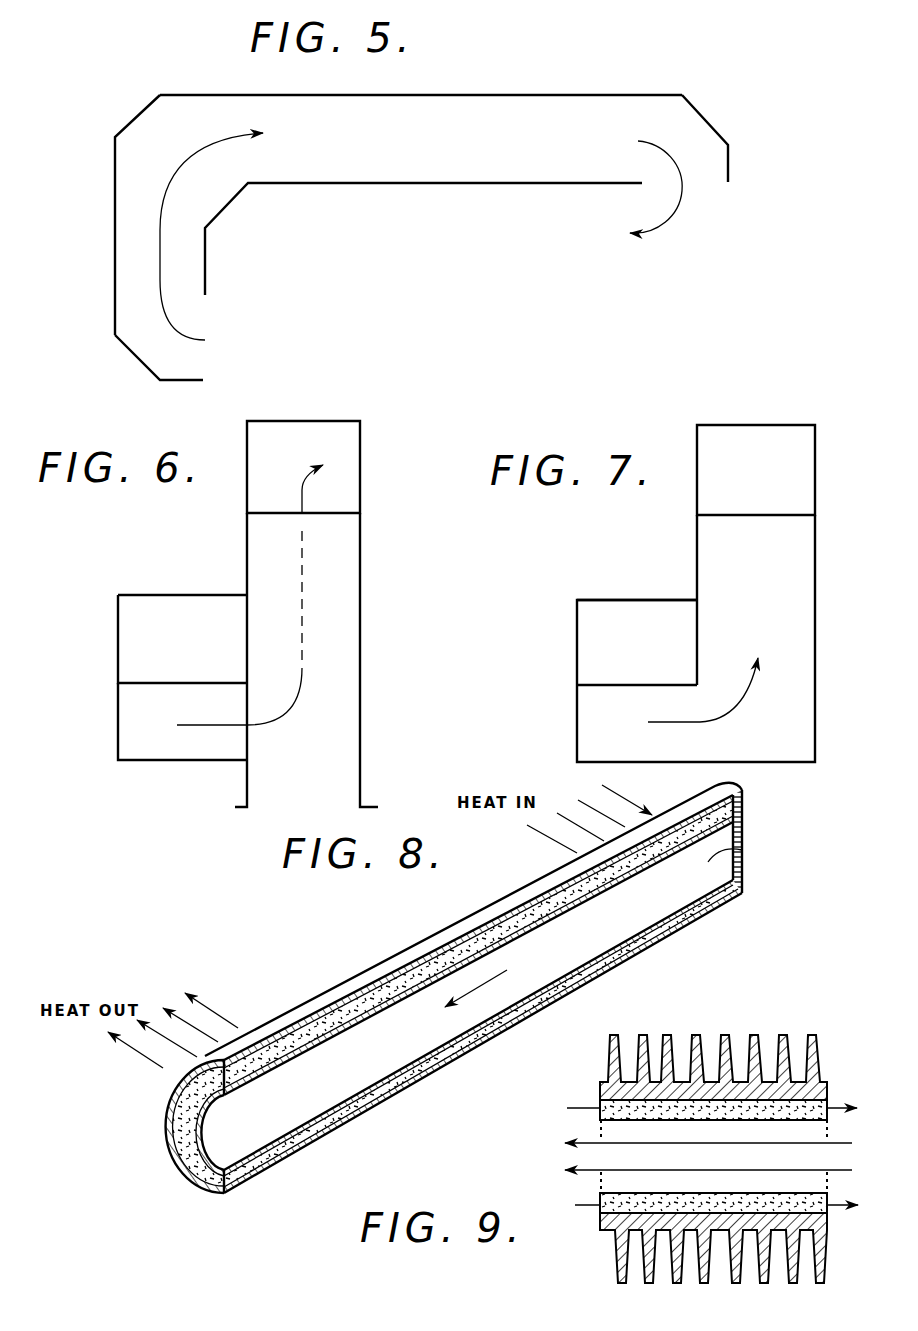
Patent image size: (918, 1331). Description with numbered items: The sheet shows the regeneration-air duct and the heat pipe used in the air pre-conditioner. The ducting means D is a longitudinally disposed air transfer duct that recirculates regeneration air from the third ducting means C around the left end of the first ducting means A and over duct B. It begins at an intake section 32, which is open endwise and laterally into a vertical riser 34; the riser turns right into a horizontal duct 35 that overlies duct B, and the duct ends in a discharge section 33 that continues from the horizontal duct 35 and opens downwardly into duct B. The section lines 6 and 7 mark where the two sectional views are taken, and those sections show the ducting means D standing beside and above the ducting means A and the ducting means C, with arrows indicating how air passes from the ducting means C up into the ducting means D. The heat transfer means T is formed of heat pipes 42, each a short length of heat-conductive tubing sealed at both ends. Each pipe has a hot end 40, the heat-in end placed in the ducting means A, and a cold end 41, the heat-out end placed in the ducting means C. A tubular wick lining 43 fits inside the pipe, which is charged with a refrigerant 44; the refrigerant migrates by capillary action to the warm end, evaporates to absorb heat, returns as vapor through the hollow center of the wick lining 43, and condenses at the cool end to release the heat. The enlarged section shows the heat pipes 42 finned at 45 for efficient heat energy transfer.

In FIG. 5, the intake section 32 is at (133, 300).
In FIG. 5, the discharge section 33 is at (697, 137).
In FIG. 5, the vertical riser 34 is at (130, 203).
In FIG. 5, the horizontal duct 35 is at (481, 110).
In FIG. 5, the section line 6— 6 is at (161, 112).
In FIG. 5, the section line 7— 7 is at (635, 43).
In FIG. 5, the ducting means D is at (468, 141).
In FIG. 6, the ducting means D is at (327, 445).
In FIG. 7, the ducting means D is at (736, 470).
In FIG. 6, the first ducting means A is at (212, 635).
In FIG. 7, the first ducting means A is at (662, 639).
In FIG. 6, the third ducting means C is at (204, 702).
In FIG. 7, the third ducting means C is at (665, 701).
In FIG. 8, the hot end 40 is at (744, 852).
In FIG. 8, the cold end 41 is at (215, 1130).
In FIG. 8, the heat pipe 42 is at (423, 933).
In FIG. 9, the heat pipe 42 is at (766, 1055).
In FIG. 9, the wick lining 43 is at (810, 1112).
In FIG. 8, the refrigerant 44 is at (590, 945).
In FIG. 9, the refrigerant 44 is at (643, 1153).
In FIG. 9, the fins 45 is at (702, 1032).
In FIG. 8, the heat transfer means T is at (322, 982).